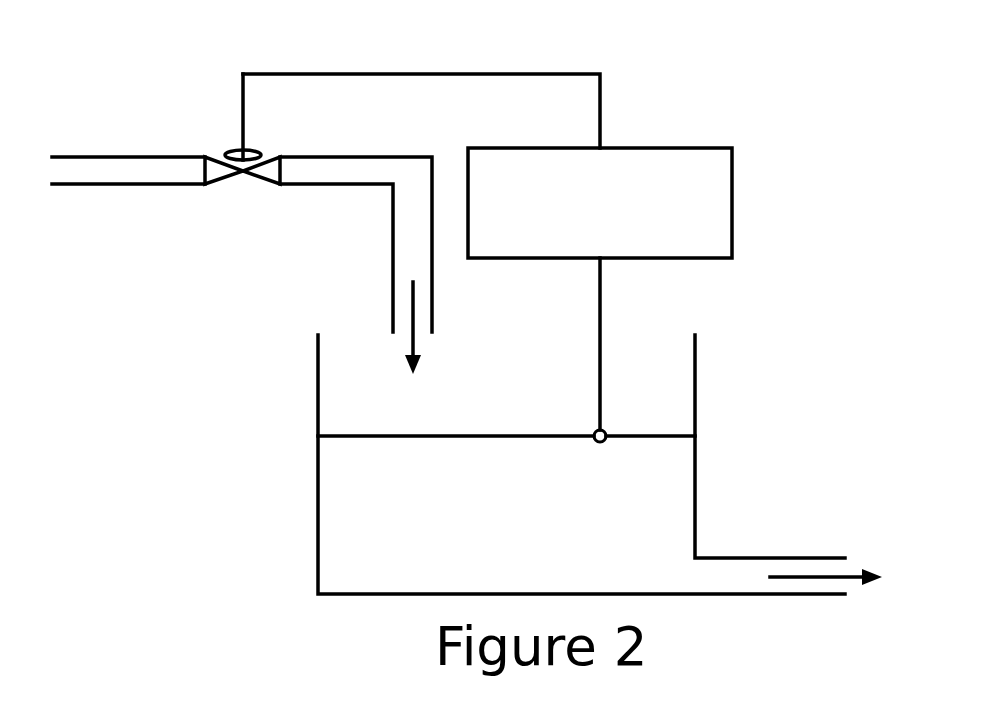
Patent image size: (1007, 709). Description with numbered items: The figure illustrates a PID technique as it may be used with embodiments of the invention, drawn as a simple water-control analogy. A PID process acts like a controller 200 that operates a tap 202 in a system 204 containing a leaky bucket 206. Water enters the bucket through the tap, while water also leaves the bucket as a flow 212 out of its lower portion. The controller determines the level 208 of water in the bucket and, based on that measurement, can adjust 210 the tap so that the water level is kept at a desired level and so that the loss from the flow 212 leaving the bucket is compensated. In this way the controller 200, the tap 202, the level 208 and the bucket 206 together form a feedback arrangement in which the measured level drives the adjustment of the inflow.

The controller 200 is at (600, 203).
The tap 202 is at (242, 203).
The system 204 is at (155, 405).
The leaky bucket 206 is at (696, 410).
The level 208 is at (593, 428).
The adjust 210 is at (447, 74).
The flow 212 is at (856, 577).